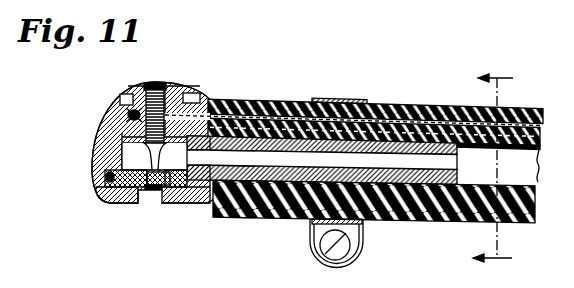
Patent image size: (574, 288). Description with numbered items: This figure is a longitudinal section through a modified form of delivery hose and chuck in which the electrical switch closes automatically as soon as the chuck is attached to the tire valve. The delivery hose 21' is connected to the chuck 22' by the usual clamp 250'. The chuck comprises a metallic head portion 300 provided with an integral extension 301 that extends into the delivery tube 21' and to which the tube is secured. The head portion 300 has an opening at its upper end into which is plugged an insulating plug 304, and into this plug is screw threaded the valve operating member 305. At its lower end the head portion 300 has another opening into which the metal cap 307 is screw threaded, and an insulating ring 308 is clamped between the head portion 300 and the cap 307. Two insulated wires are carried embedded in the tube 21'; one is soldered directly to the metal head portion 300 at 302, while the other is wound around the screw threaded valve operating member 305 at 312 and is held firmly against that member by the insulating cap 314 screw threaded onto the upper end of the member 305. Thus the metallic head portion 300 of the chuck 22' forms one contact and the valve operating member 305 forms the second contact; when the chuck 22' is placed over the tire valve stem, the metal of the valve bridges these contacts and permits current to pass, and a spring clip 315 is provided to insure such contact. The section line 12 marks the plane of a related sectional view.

The metallic head portion 300 is at (100, 125).
The insulating plug 304 is at (115, 115).
The winding of wire around valve operating member 312 is at (134, 113).
The insulating cap 314 is at (171, 101).
The solder connection to head portion 302 is at (203, 112).
The integral extension 301 is at (288, 122).
The clamp 250' is at (356, 81).
The delivery hose 21' is at (375, 92).
The chuck 22' is at (130, 175).
The insulating ring 308 is at (100, 192).
The spring clip 315 is at (139, 203).
The valve operating member 305 is at (159, 191).
The metal cap 307 is at (203, 204).
The section line 12- 12 is at (493, 169).